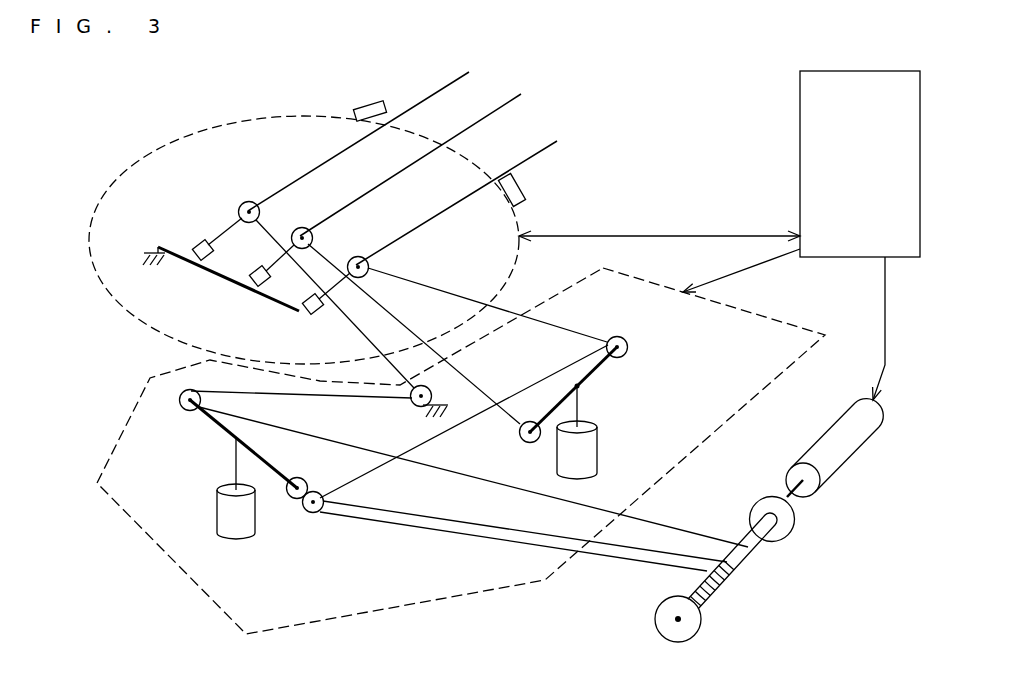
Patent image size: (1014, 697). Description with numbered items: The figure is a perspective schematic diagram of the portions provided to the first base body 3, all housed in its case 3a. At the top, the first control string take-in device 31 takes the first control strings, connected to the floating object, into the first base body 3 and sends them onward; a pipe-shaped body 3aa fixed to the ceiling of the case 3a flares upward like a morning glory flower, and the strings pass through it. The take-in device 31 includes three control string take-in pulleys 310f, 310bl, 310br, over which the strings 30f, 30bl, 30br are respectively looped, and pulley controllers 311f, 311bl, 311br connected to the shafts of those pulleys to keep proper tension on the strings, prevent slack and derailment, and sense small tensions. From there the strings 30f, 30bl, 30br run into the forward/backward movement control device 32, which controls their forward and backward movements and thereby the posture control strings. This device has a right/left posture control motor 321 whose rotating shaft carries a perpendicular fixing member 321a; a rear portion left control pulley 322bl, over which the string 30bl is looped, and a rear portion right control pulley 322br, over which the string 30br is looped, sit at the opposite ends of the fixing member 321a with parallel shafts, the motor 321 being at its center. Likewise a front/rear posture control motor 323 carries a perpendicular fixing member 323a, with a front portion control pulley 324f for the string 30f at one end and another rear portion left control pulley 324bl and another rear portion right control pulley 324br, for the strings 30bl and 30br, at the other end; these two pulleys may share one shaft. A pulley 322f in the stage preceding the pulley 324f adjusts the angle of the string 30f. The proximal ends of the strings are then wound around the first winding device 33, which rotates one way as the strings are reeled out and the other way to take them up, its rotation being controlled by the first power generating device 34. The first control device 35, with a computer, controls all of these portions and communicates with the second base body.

The first base body 3 is at (671, 46).
The case 3a is at (216, 269).
The pipe-shaped body 3aa is at (366, 101).
The string 30f is at (440, 92).
The string 30bl is at (477, 126).
The string 30br is at (546, 148).
The first control string take-in device 31 is at (117, 302).
The control string take-in pulley 310f is at (247, 201).
The control string take-in pulley 310bl is at (300, 228).
The control string take-in pulley 310br is at (369, 266).
The pulley controller 311f is at (196, 243).
The pulley controller 311bl is at (258, 288).
The pulley controller 311br is at (306, 314).
The forward/backward movement control device 32 is at (723, 302).
The right/left posture control motor 321 is at (588, 460).
The fixing member 321a is at (594, 371).
The pulley 322f is at (413, 400).
The rear portion left control pulley 322bl is at (532, 443).
The rear portion right control pulley 322br is at (629, 346).
The front/rear posture control motor 323 is at (220, 510).
The fixing member 323a is at (217, 423).
The front portion control pulley 324f is at (200, 403).
The rear portion left control pulley 324bl is at (311, 514).
The rear portion right control pulley 324br is at (288, 499).
The first winding device 33 is at (757, 540).
The first power generating device 34 is at (848, 448).
The first control device 35 is at (800, 125).